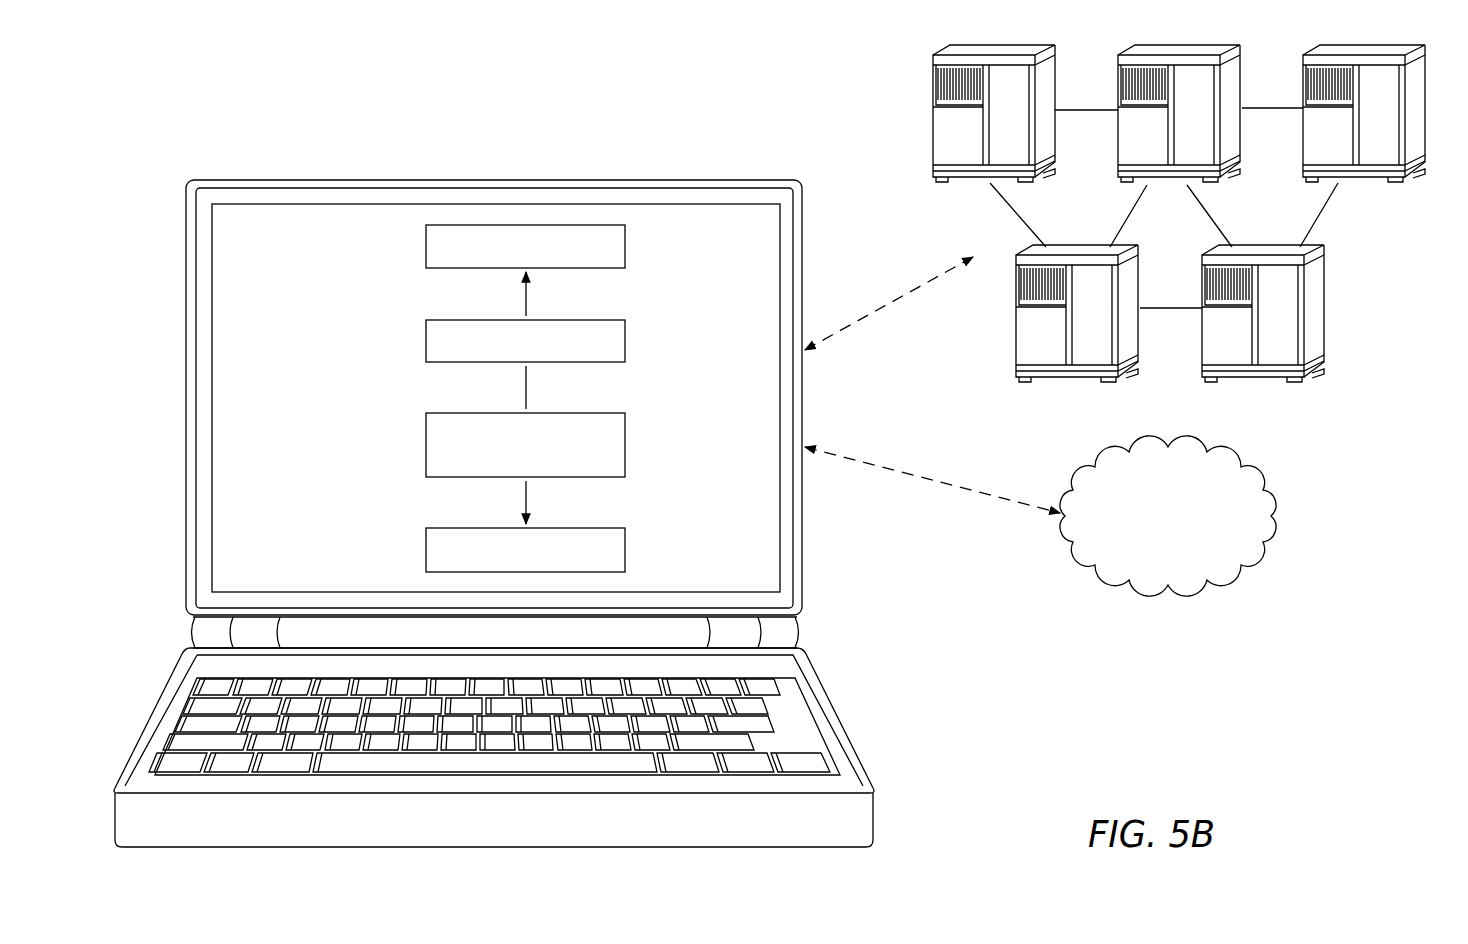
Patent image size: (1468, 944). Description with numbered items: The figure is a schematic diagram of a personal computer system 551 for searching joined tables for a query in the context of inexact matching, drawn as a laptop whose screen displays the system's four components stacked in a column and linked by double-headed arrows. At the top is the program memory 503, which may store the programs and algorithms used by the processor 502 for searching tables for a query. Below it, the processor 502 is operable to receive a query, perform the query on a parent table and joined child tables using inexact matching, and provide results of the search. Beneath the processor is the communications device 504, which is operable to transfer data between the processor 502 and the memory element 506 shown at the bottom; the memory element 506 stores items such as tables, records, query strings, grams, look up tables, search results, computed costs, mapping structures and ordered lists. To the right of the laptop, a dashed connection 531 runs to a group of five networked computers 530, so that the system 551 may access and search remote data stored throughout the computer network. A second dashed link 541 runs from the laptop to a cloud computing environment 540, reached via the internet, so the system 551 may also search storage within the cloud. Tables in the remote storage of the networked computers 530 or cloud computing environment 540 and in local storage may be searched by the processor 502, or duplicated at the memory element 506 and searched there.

The personal computer system 551 is at (340, 177).
The program memory 503 is at (426, 245).
The processor 502 is at (426, 340).
The communications device 504 is at (426, 446).
The memory element 506 is at (426, 551).
The networked computers 530 is at (1380, 231).
The connection 531 is at (890, 302).
The communication link to network 541 is at (935, 482).
The cloud computing environment 540 is at (1189, 531).